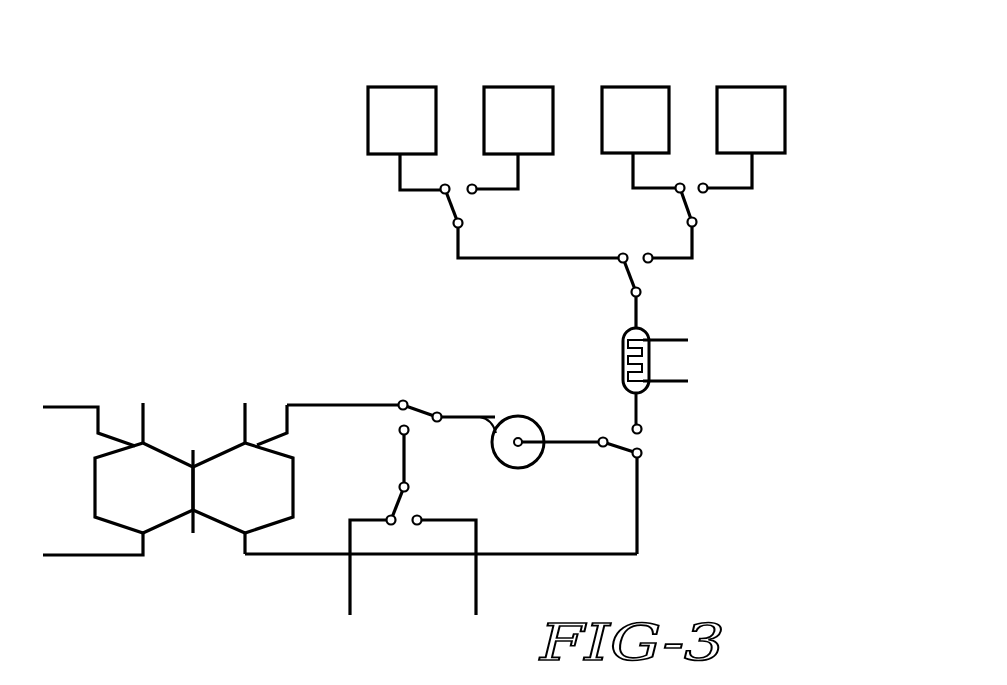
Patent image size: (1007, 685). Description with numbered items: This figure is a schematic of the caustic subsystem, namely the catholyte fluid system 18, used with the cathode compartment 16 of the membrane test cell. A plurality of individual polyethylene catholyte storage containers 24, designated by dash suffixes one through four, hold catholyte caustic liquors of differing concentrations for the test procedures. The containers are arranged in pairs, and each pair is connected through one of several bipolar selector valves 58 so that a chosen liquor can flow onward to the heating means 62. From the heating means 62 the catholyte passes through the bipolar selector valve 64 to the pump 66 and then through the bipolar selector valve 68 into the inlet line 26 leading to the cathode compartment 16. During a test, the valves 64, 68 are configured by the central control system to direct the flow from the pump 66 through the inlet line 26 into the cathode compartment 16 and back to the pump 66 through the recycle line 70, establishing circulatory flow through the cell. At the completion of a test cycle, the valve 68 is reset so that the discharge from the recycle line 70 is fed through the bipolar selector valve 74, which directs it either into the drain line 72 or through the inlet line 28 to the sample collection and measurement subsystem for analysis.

The catholyte fluid system 18 is at (541, 82).
The catholyte storage containers 24 is at (648, 85).
The bipolar selector valves 58 is at (450, 203).
The heating means 62 is at (645, 333).
The cathode compartment 16 is at (215, 455).
The inlet line 26 is at (333, 402).
The bipolar selector valve 68 is at (424, 407).
The pump 66 is at (519, 416).
The bipolar selector valve 64 is at (622, 445).
The recycle line 70 is at (305, 550).
The bipolar selector valve 74 is at (407, 506).
The drain line 72 is at (348, 595).
The inlet line 28 is at (478, 602).